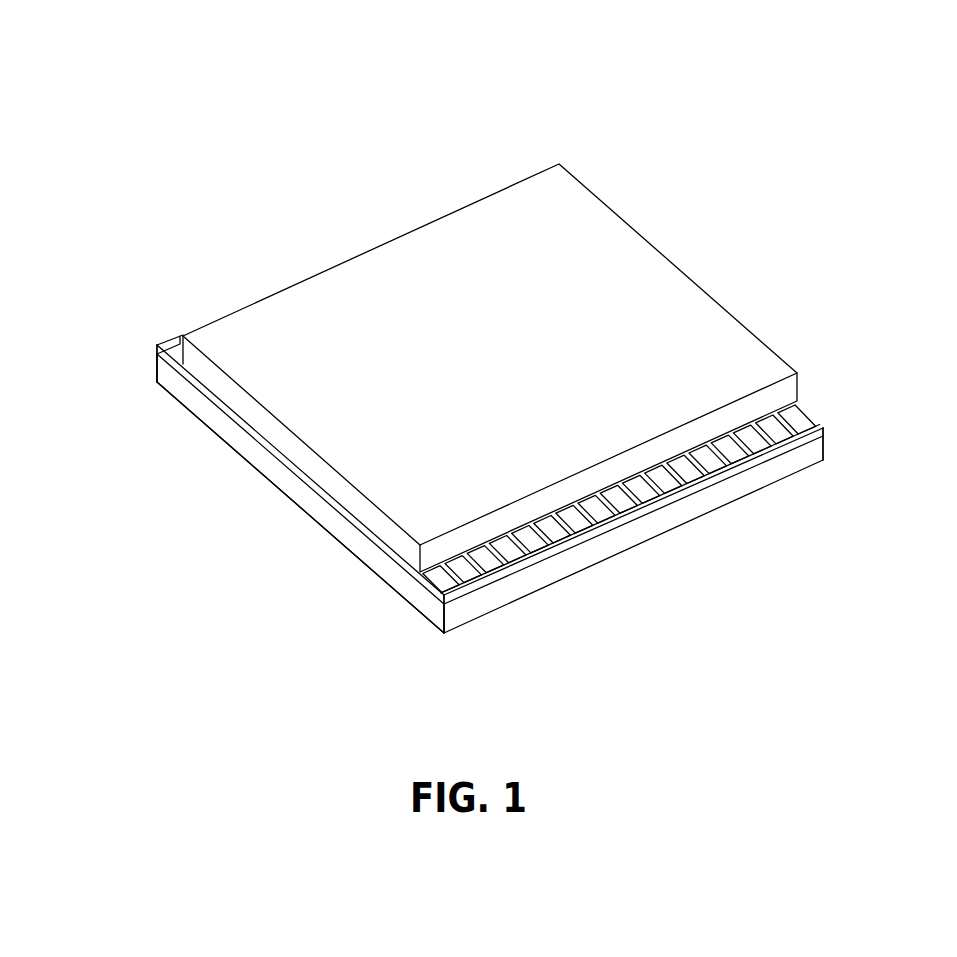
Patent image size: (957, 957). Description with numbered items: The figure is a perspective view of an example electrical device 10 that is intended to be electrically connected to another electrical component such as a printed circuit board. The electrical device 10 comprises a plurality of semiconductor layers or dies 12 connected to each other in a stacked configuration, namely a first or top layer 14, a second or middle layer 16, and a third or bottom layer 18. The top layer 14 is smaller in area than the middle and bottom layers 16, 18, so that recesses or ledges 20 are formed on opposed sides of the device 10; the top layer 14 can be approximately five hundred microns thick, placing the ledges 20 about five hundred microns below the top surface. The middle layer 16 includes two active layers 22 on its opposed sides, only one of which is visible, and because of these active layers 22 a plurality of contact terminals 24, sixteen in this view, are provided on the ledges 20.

The electrical device 10 is at (744, 124).
The semiconductor layers or dies 12 is at (662, 531).
The top layer 14 is at (181, 352).
The middle layer 16 is at (157, 353).
The bottom layer 18 is at (168, 381).
The ledges 20 is at (133, 376).
The active layers 22 is at (730, 463).
The contact terminals 24 is at (667, 480).